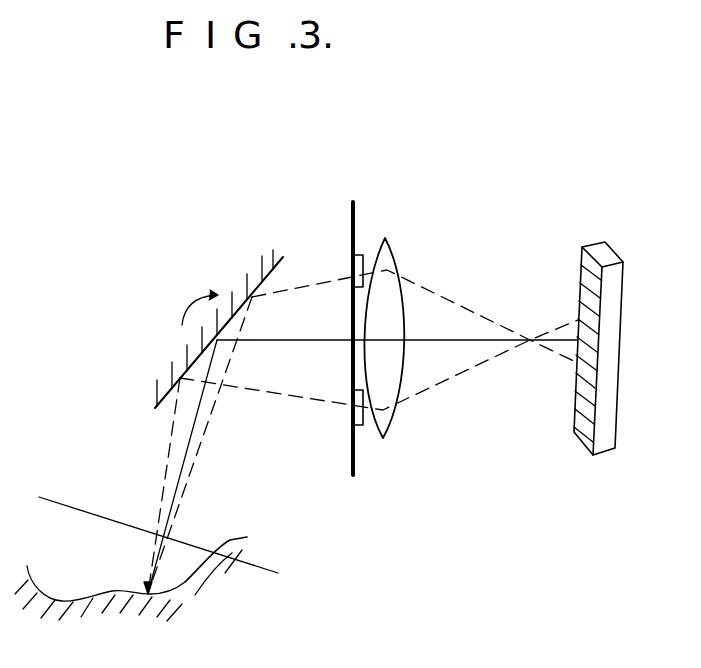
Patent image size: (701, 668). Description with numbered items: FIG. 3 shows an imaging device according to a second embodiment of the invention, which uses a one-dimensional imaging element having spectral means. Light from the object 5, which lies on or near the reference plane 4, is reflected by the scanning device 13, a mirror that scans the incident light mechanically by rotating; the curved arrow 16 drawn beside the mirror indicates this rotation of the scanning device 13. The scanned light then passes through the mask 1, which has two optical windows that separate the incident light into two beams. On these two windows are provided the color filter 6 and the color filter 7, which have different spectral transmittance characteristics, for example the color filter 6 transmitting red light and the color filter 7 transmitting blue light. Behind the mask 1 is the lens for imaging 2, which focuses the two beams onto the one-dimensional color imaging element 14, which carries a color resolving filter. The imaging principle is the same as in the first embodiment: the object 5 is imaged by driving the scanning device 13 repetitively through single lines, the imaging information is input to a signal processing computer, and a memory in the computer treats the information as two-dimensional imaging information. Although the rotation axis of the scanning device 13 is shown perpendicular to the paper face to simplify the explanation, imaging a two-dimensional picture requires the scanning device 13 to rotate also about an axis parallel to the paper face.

The mask 1 is at (352, 200).
The lens for imaging 2 is at (392, 253).
The reference plane 4 is at (267, 573).
The object 5 is at (247, 543).
The color filter 6 is at (362, 255).
The color filter 7 is at (362, 426).
The scanning device 13 is at (257, 268).
The one-dimensional color imaging element 14 is at (615, 242).
The rotation direction 16 is at (215, 338).